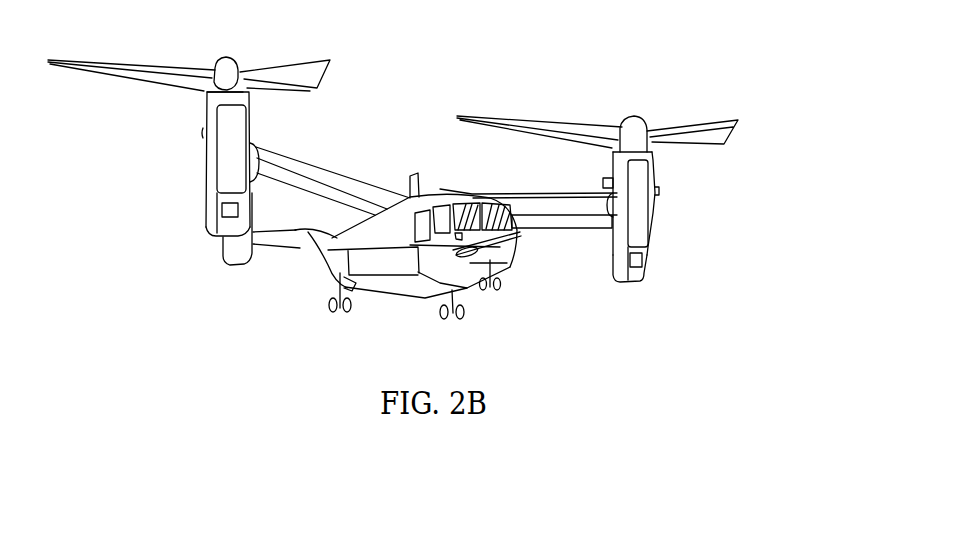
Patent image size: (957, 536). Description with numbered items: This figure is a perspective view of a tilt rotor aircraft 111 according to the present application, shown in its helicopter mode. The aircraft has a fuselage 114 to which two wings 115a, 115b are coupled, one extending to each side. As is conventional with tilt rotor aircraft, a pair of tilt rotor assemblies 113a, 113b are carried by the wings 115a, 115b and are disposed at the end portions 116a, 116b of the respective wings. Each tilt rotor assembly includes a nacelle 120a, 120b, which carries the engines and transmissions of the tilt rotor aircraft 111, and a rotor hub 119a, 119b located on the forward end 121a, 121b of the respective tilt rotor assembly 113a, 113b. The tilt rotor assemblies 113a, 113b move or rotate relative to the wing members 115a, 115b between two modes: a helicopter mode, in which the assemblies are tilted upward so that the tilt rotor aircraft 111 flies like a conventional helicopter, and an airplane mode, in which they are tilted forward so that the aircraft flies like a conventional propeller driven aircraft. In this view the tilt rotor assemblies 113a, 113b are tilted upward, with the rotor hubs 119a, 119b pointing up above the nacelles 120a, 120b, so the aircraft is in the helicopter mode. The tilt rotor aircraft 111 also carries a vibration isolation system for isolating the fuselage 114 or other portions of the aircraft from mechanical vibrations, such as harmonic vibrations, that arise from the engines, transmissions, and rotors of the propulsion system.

The tilt rotor aircraft 111 is at (295, 280).
The fuselage 114 is at (413, 290).
The wing 115a is at (538, 190).
The wing 115b is at (324, 162).
The tilt rotor assembly 113a is at (662, 223).
The tilt rotor assembly 113b is at (192, 182).
The end portion of wing 116a is at (605, 245).
The end portion of wing 116b is at (267, 140).
The rotor hub 119a is at (647, 127).
The rotor hub 119b is at (215, 65).
The nacelle 120a is at (647, 267).
The nacelle 120b is at (210, 227).
The forward end of tilt rotor assembly 121a is at (657, 157).
The forward end of tilt rotor assembly 121b is at (203, 99).